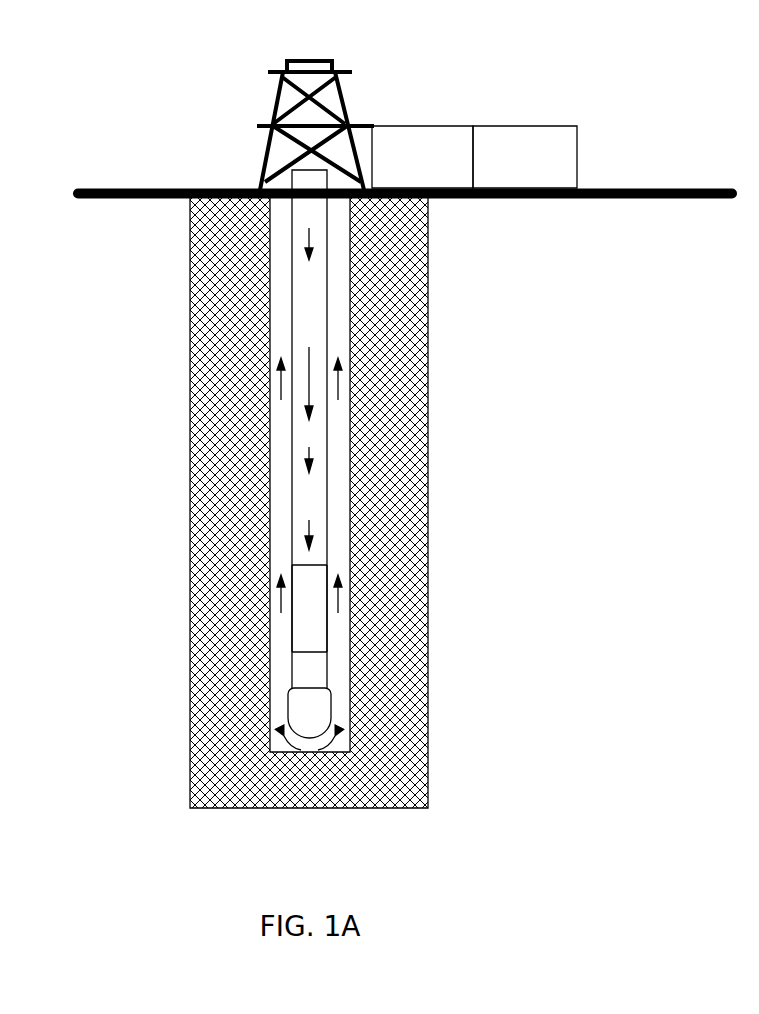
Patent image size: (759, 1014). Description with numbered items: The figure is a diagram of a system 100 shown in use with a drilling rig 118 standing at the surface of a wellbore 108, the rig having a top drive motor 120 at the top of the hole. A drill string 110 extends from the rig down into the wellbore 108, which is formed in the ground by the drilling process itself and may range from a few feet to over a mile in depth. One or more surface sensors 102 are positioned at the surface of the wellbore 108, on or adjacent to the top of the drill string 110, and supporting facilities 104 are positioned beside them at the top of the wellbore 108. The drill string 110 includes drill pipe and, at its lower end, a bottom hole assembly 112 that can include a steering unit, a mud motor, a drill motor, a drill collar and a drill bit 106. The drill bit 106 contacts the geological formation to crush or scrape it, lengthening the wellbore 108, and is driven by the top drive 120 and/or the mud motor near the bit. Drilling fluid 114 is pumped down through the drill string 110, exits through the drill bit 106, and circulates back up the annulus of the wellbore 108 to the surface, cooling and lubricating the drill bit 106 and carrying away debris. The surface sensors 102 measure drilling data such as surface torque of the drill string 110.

The system 100 is at (220, 77).
The surface sensors 102 is at (422, 157).
The supporting facilities 104 is at (525, 157).
The drill bit 106 is at (330, 708).
The wellbore 108 is at (270, 230).
The drill string 110 is at (292, 323).
The bottom hole assembly 112 is at (292, 623).
The drilling fluid 114 is at (280, 340).
The drilling rig 118 is at (283, 62).
The top drive motor 120 is at (292, 178).